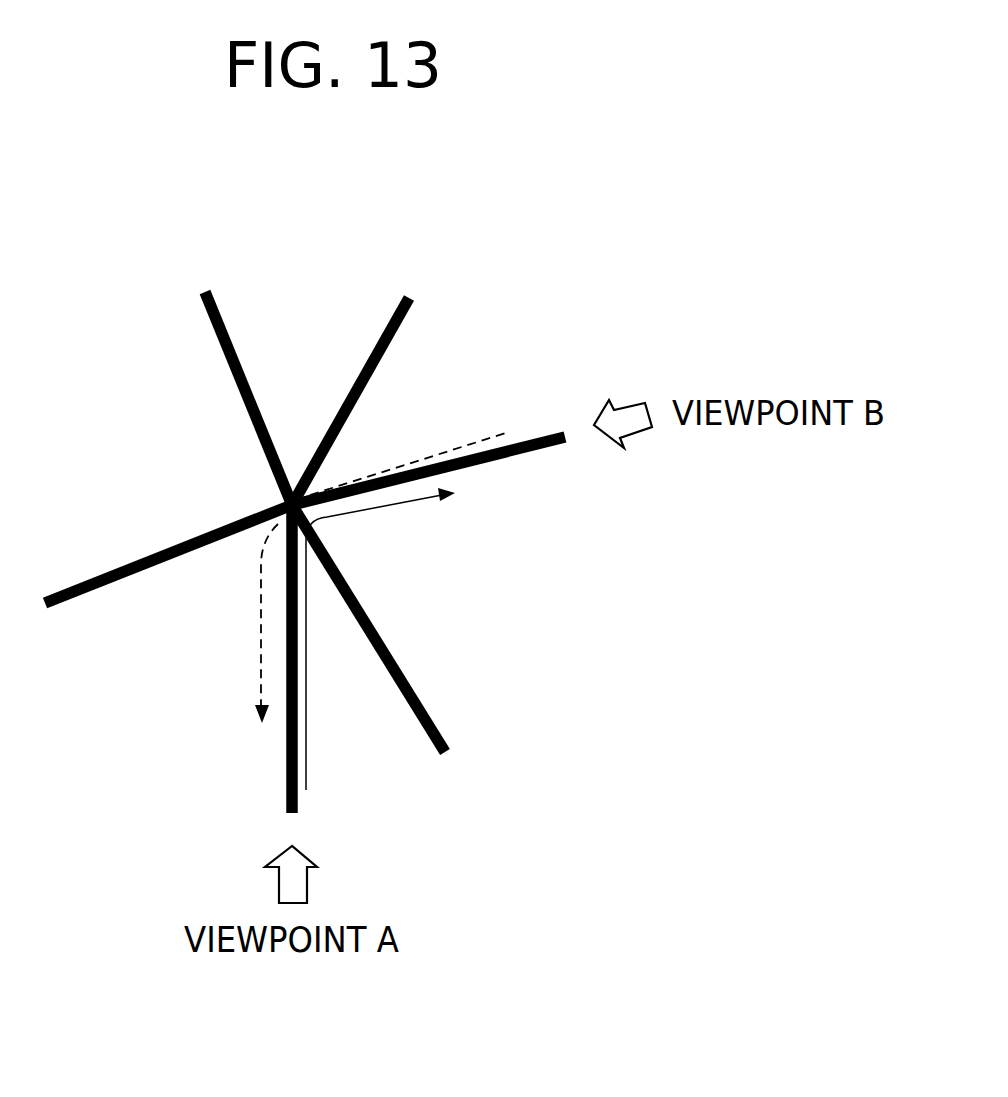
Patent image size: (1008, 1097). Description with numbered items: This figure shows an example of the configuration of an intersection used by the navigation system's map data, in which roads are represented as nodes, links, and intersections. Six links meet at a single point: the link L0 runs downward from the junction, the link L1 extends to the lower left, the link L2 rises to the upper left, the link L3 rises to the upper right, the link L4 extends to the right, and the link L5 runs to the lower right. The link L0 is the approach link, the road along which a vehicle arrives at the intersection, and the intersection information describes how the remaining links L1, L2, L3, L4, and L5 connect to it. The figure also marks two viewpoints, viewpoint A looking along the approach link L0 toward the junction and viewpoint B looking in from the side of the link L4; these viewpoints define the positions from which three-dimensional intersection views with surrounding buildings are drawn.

The link L0 is at (266, 659).
The link L1 is at (168, 554).
The link L2 is at (248, 398).
The link L3 is at (365, 401).
The link L4 is at (428, 471).
The link L5 is at (374, 628).